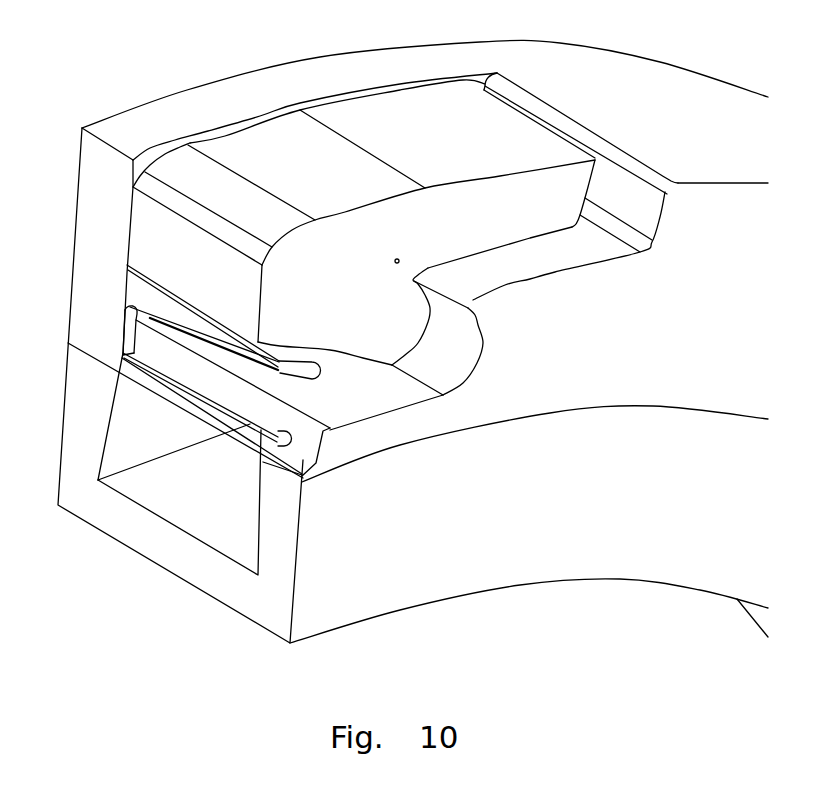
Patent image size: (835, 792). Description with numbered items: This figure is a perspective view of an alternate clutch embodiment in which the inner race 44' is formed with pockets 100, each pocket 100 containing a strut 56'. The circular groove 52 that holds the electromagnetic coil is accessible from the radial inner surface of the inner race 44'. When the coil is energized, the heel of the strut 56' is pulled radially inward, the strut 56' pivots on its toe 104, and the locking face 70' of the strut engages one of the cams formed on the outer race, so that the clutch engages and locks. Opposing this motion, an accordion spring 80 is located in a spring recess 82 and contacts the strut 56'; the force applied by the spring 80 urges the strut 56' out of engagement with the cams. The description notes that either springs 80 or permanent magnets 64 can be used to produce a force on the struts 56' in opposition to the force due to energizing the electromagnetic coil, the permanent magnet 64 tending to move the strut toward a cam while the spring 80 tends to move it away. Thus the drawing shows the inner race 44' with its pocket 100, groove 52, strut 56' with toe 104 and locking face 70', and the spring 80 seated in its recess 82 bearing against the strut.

The inner race 44' is at (413, 341).
The circular groove 52 is at (172, 468).
The strut 56' is at (364, 222).
The permanent magnet 64 is at (369, 401).
The locking face 70' is at (587, 129).
The accordion spring 80 is at (177, 348).
The spring recess 82 is at (132, 340).
The pocket 100 is at (557, 266).
The toe 104 is at (405, 341).